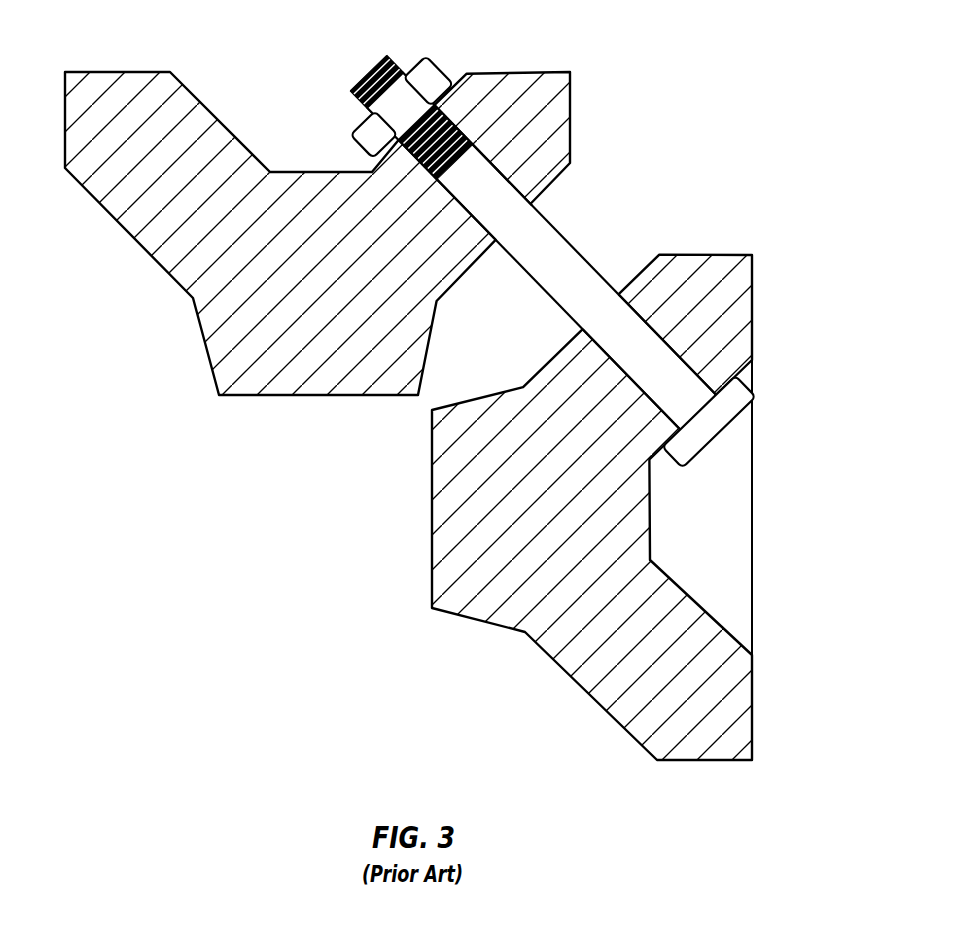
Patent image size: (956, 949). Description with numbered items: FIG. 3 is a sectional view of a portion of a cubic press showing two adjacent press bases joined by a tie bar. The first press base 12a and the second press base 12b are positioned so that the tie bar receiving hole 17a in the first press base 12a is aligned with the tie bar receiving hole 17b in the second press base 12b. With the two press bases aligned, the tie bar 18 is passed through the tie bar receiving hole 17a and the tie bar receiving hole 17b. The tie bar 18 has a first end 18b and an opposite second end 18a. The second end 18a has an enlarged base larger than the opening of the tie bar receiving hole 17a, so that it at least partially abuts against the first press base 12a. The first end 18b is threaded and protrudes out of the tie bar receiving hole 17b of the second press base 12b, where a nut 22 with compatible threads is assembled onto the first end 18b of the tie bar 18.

The first press base 12a is at (481, 588).
The second press base 12b is at (246, 312).
The tie bar receiving hole 17a is at (685, 313).
The tie bar receiving hole 17b is at (510, 170).
The tie bar 18 is at (568, 253).
The second end 18a is at (722, 418).
The first end 18b is at (375, 72).
The nut 22 is at (432, 78).